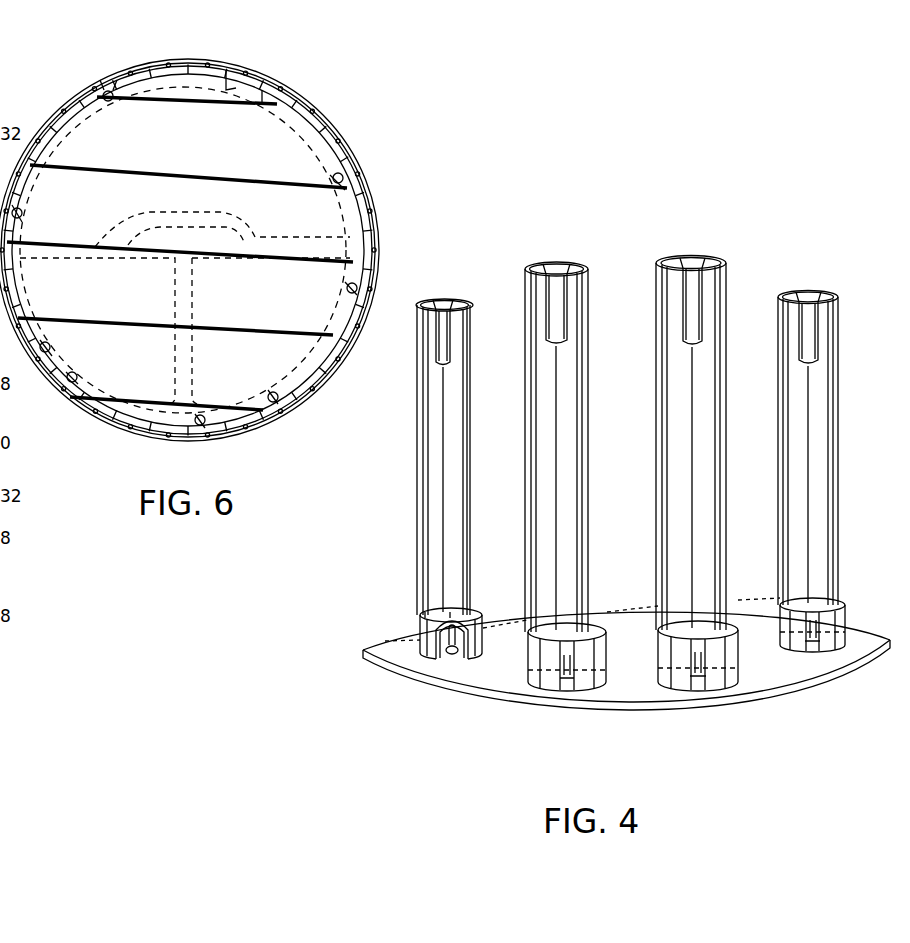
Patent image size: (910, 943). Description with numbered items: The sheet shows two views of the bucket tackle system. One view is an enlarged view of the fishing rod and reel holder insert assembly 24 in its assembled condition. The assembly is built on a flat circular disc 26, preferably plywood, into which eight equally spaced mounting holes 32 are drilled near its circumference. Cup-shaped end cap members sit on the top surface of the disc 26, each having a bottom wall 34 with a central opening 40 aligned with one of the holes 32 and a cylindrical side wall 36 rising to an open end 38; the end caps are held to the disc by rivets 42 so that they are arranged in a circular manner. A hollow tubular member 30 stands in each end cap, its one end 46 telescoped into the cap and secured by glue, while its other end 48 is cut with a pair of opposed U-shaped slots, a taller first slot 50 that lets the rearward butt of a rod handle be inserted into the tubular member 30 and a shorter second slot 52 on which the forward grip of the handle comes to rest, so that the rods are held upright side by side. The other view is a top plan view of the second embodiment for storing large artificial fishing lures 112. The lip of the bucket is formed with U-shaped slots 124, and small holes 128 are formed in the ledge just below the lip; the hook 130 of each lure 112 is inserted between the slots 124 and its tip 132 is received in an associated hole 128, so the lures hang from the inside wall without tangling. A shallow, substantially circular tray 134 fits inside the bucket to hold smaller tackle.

In FIG. 6, the fishing rod and reel holder insert assembly 24 is at (399, 368).
In FIG. 4, the flat circular disc 26 is at (363, 655).
In FIG. 4, the hollow tubular members 30 is at (625, 434).
In FIG. 4, the mounting holes 32 is at (800, 648).
In FIG. 4, the bottom wall 34 is at (438, 652).
In FIG. 4, the cylindrical side wall 36 is at (420, 656).
In FIG. 4, the open end 38 is at (424, 615).
In FIG. 4, the central opening 40 is at (450, 652).
In FIG. 4, the rivets 42 is at (667, 660).
In FIG. 4, the one end of the tubular member 46 is at (840, 605).
In FIG. 4, the other end of the tubular member 48 is at (690, 275).
In FIG. 4, the first slot 50 is at (555, 318).
In FIG. 4, the second slot 52 is at (566, 280).
In FIG. 6, the artificial fishing lures 112 is at (335, 175).
In FIG. 6, the U-shaped slots 124 is at (210, 75).
In FIG. 6, the small holes 128 is at (123, 70).
In FIG. 6, the hook 130 is at (28, 215).
In FIG. 6, the tip 132 is at (340, 172).
In FIG. 6, the container or tray 134 is at (72, 125).